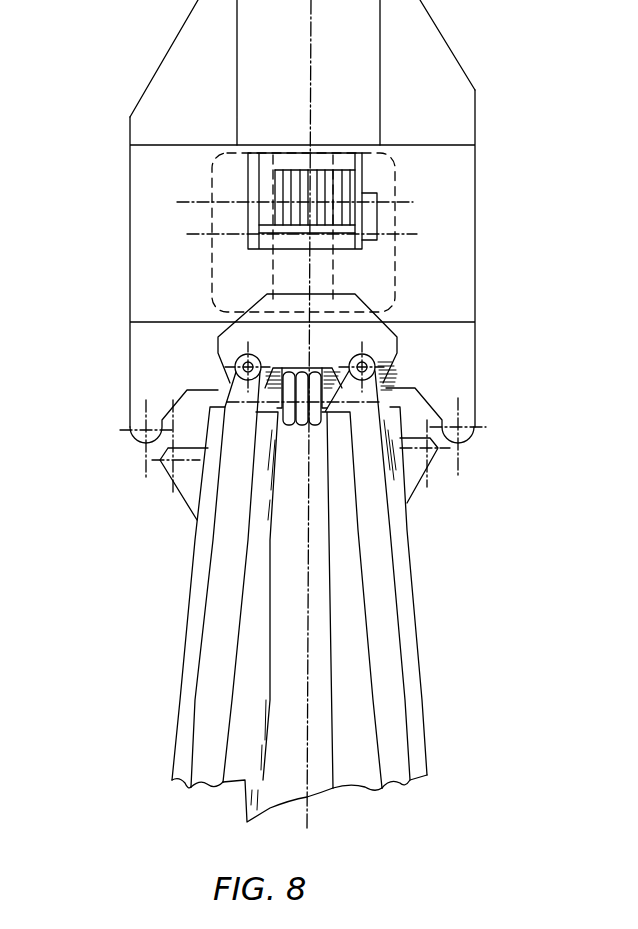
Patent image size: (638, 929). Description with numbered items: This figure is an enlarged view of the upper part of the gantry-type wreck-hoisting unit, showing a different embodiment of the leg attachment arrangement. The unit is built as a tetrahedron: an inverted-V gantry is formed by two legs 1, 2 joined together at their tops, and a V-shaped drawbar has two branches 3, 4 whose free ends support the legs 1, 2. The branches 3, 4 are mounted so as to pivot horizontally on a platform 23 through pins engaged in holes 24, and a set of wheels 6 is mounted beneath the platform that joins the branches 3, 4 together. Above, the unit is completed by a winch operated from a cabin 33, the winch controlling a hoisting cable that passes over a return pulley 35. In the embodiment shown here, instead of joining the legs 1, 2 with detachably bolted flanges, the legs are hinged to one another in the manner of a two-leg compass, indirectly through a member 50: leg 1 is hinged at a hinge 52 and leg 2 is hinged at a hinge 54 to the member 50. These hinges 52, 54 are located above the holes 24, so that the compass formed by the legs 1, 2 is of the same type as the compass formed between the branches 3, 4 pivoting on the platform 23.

The leg 1 is at (222, 568).
The leg 2 is at (382, 568).
The branch 3 is at (188, 692).
The branch 4 is at (412, 684).
The set of wheels 6 is at (393, 187).
The platform 23 is at (460, 300).
The holes 24 is at (245, 366).
The cabin 33 is at (432, 55).
The return pulley 35 is at (322, 418).
The member 50 is at (397, 342).
The hinge 52 is at (241, 370).
The hinge 54 is at (385, 357).